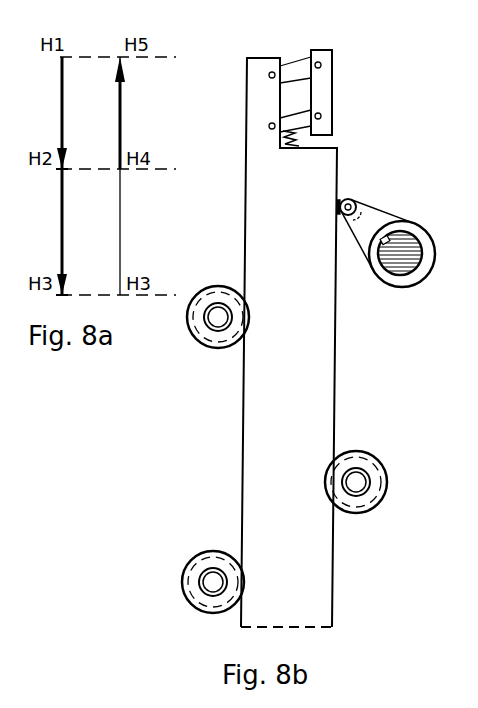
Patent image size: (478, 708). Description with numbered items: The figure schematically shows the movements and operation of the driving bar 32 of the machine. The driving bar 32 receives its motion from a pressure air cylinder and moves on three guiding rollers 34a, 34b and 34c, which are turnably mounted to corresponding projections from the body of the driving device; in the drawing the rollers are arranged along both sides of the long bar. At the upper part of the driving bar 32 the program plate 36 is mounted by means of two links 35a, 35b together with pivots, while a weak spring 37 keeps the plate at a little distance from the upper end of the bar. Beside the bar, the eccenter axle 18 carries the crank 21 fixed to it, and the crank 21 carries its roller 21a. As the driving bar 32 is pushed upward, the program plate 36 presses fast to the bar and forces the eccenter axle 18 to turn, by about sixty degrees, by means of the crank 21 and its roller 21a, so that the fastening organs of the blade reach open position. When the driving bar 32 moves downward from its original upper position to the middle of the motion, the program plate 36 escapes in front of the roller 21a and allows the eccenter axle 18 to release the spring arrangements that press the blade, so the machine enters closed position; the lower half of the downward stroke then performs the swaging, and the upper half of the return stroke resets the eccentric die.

The eccenter axle 18 is at (408, 249).
The crank 21 is at (400, 226).
The roller 21a is at (352, 199).
The driving bar 32 is at (298, 506).
The guiding roller 34a is at (205, 330).
The guiding roller 34b is at (205, 564).
The guiding roller 34c is at (362, 463).
The link 35a is at (305, 69).
The link 35b is at (305, 119).
The program plate 36 is at (325, 93).
The weak spring 37 is at (300, 142).